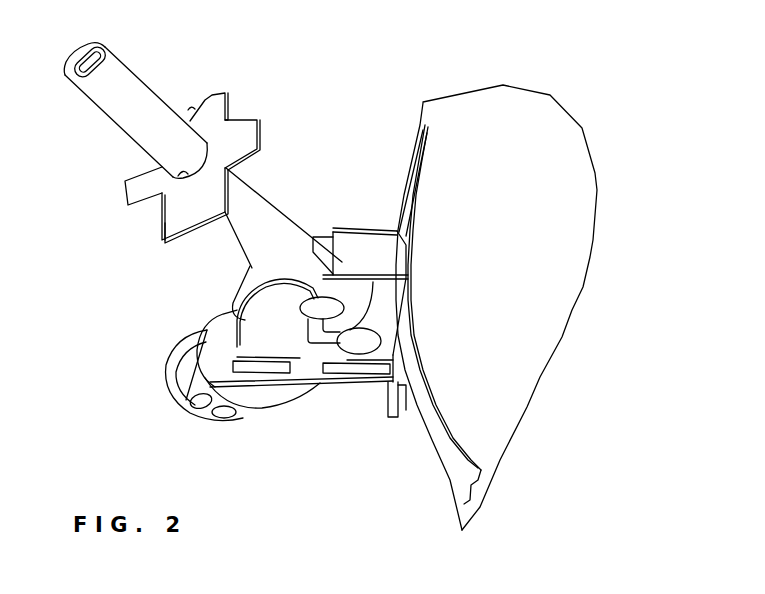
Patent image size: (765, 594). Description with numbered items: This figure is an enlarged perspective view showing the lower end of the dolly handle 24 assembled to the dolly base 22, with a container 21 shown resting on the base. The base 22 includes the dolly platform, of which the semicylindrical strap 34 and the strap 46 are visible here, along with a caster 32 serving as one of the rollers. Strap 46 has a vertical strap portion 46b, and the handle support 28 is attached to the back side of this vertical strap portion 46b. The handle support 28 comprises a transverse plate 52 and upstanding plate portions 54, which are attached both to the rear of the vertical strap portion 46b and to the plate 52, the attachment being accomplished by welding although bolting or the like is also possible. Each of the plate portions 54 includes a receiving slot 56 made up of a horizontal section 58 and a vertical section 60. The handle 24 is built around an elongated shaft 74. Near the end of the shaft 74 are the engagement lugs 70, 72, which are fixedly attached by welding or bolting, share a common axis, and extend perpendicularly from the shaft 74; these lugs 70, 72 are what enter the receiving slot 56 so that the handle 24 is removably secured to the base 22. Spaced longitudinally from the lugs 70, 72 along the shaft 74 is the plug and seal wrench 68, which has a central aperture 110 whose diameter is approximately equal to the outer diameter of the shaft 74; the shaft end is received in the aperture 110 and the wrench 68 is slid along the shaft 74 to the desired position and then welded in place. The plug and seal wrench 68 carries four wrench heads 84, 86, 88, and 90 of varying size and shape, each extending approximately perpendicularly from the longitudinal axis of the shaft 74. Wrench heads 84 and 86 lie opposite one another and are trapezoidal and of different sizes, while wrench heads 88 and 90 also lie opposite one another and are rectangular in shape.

The container 21 is at (572, 270).
The base 22 is at (432, 363).
The handle 24 is at (117, 98).
The handle support 28 is at (210, 395).
The caster 32 is at (238, 428).
The semicylindrical strap 34 is at (477, 484).
The strap 46 is at (432, 428).
The vertical strap portion 46b is at (393, 389).
The transverse plate 52 is at (330, 382).
The upstanding plate portions 54 is at (397, 234).
The receiving slot 56 is at (308, 350).
The horizontal section 58 is at (367, 300).
The vertical section 60 is at (335, 266).
The plug and seal wrench 68 is at (168, 176).
The engagement lug 70 is at (320, 240).
The engagement lug 72 is at (365, 340).
The elongated shaft 74 is at (126, 74).
The wrench head 84 is at (247, 132).
The wrench head 86 is at (125, 192).
The wrench head 88 is at (212, 112).
The wrench head 90 is at (165, 238).
The aperture 110 is at (195, 205).